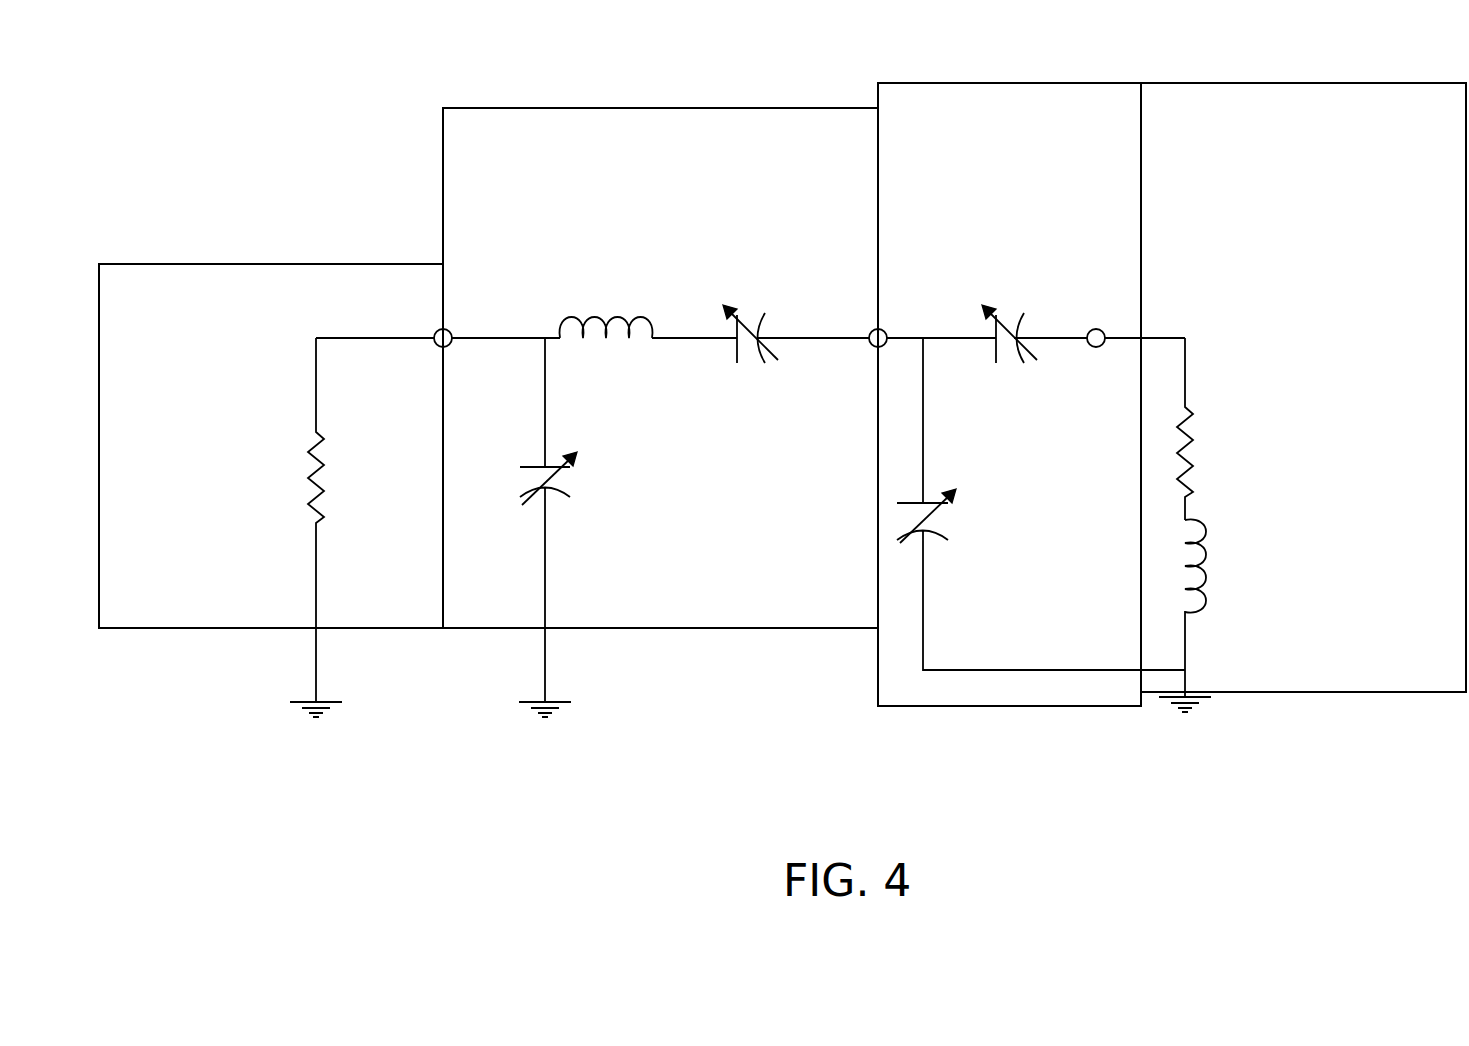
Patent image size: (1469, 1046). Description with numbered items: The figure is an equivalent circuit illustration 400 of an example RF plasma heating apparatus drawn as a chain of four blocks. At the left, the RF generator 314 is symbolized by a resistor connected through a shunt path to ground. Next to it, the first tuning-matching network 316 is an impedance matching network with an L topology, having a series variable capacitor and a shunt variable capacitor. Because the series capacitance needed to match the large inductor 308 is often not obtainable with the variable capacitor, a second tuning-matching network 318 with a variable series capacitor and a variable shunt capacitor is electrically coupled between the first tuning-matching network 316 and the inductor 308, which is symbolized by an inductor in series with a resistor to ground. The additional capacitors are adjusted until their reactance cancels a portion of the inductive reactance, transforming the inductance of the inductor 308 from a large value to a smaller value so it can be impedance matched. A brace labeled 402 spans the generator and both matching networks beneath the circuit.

The equivalent circuit illustration 400 is at (243, 121).
The matching network section 402 is at (1148, 735).
The RF generator 314 is at (272, 264).
The first tuning-matching network 316 is at (661, 108).
The second tuning-matching network 318 is at (1007, 83).
The inductor 308 is at (1304, 83).